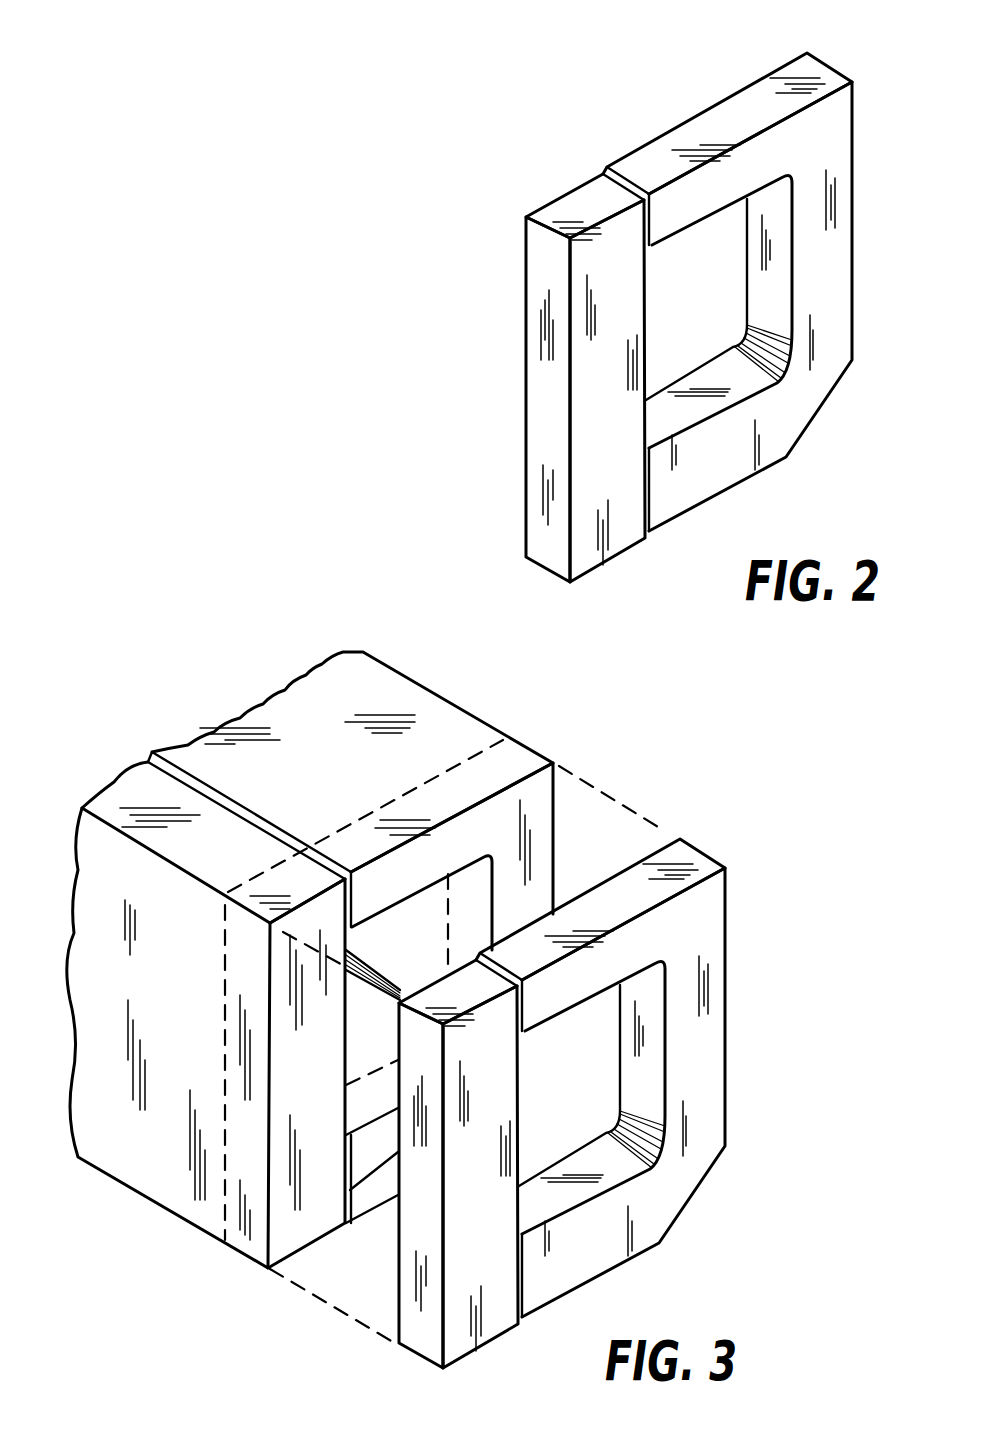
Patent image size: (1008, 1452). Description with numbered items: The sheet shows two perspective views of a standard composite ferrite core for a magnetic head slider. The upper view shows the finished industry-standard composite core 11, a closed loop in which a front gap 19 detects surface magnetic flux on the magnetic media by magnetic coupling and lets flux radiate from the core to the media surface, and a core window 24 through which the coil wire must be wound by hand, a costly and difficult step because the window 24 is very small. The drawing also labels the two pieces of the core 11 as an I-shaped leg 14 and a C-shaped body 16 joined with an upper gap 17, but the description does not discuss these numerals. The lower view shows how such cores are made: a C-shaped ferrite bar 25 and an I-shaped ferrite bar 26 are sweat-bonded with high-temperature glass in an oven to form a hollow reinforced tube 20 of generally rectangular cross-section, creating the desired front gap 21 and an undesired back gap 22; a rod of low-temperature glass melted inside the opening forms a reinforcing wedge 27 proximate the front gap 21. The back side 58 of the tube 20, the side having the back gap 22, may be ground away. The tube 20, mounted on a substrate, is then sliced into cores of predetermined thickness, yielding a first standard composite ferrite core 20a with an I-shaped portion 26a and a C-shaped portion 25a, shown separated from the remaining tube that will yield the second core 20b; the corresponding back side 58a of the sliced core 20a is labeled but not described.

In FIG. 2, the composite core 11 is at (700, 305).
In FIG. 2, the leg piece of core 14 is at (538, 406).
In FIG. 2, the C-shaped body of core 16 is at (838, 233).
In FIG. 2, the upper gap between leg and body 17 is at (607, 168).
In FIG. 2, the front gap 19 is at (652, 530).
In FIG. 2, the core window 24 is at (715, 307).
In FIG. 3, the hollow reinforced tube 20 is at (434, 968).
In FIG. 3, the first standard composite ferrite core 20a is at (600, 1072).
In FIG. 3, the second core section 20b is at (365, 961).
In FIG. 3, the front gap 21 is at (357, 1218).
In FIG. 3, the back gap 22 is at (353, 912).
In FIG. 3, the C-shaped ferrite bar 25 is at (380, 692).
In FIG. 3, the C-shaped portion 25a is at (695, 912).
In FIG. 3, the I-shaped ferrite bar 26 is at (157, 1215).
In FIG. 3, the I-shaped portion 26a is at (480, 1345).
In FIG. 3, the reinforcing wedge 27 is at (362, 1068).
In FIG. 3, the back side 58 is at (310, 702).
In FIG. 3, the top surface of first core section 58a is at (645, 863).